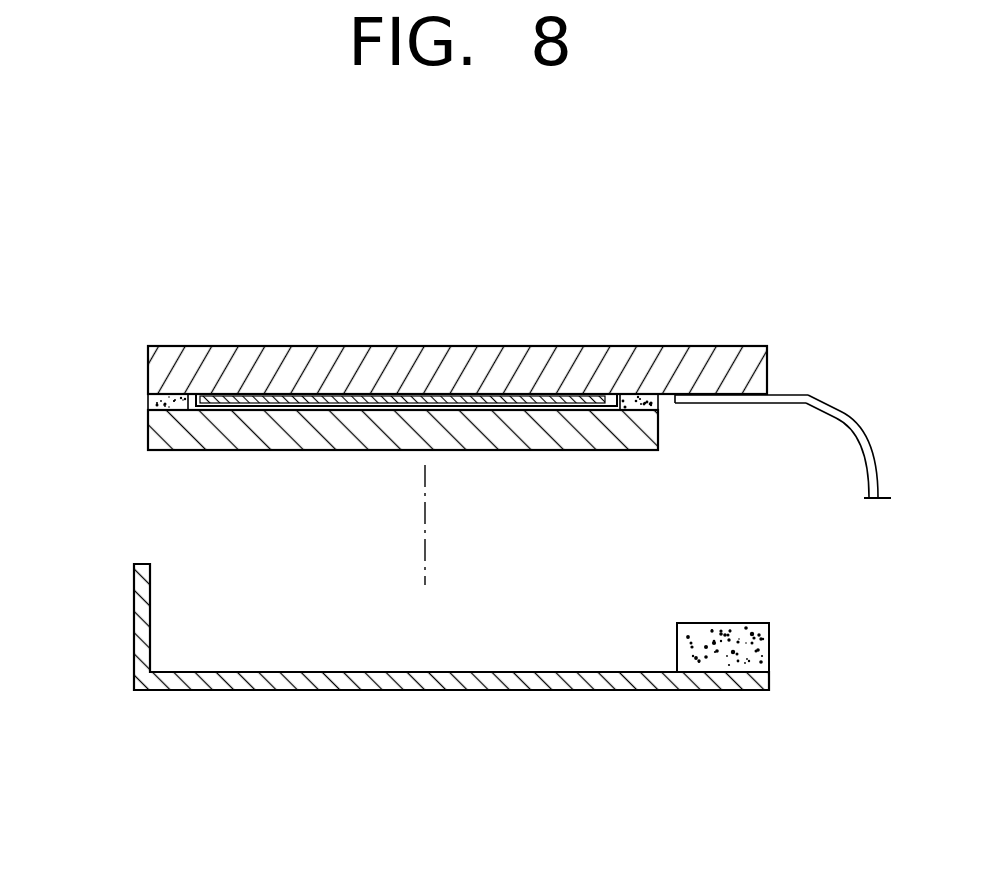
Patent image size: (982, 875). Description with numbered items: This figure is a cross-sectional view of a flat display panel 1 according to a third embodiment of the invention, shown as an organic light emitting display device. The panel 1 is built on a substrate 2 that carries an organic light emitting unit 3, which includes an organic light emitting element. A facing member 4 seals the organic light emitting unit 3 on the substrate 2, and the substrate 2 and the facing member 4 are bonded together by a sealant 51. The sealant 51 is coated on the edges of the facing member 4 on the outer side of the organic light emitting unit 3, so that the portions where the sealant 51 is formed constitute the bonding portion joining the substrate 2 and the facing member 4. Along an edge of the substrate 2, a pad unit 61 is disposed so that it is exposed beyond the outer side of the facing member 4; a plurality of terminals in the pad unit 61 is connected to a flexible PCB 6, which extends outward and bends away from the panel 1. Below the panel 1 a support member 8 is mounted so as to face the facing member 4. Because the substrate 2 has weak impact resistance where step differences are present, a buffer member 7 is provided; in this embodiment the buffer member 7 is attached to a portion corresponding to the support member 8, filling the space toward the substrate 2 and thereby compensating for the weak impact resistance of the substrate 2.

The panel 1 is at (140, 278).
The substrate 2 is at (148, 362).
The organic light emitting unit 3 is at (316, 397).
The facing member 4 is at (148, 440).
The sealant 51 is at (148, 402).
The flexible PCB 6 is at (840, 415).
The pad unit 61 is at (733, 396).
The buffer member 7 is at (722, 655).
The support member 8 is at (495, 691).